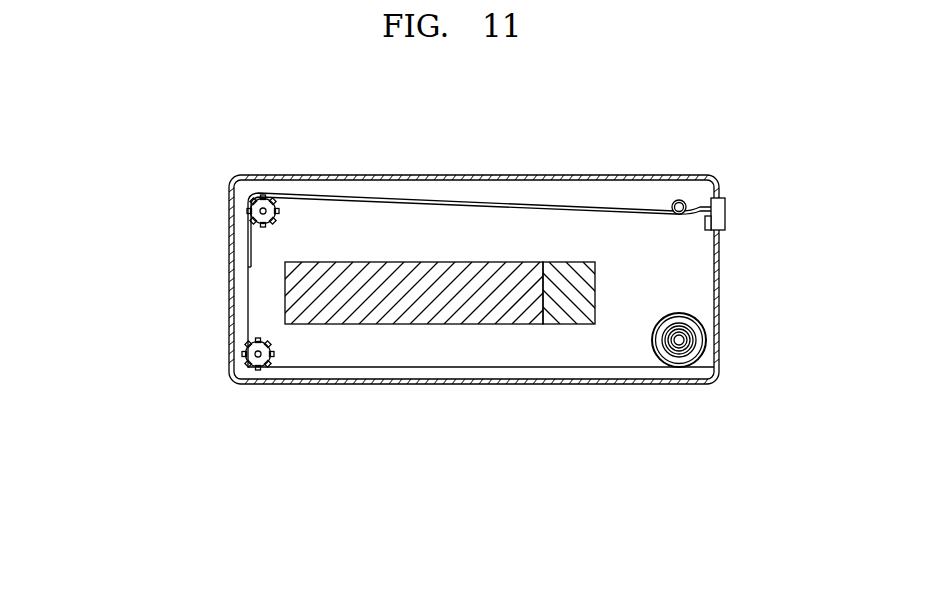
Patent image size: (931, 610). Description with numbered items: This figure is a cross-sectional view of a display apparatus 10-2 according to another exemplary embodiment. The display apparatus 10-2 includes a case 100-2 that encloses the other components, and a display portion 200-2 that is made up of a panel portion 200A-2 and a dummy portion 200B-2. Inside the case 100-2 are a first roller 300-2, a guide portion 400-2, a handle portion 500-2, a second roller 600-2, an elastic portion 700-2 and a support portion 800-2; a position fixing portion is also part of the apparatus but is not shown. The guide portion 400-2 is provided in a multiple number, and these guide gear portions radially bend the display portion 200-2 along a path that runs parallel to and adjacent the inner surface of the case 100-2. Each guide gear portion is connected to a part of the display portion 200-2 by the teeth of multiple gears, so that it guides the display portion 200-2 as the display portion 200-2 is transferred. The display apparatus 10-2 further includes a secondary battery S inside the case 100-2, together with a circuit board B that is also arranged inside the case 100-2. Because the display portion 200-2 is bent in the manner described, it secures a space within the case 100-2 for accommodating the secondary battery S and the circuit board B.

The display apparatus 10-2 is at (499, 116).
The case 100-2 is at (601, 176).
The display portion 200-2 is at (387, 280).
The panel portion 200A-2 is at (248, 244).
The dummy portion 200B-2 is at (248, 303).
The first roller 300-2 is at (706, 340).
The guide portion 400-2 is at (257, 358).
The handle portion 500-2 is at (722, 213).
The second roller 600-2 is at (684, 199).
The elastic portion 700-2 is at (680, 346).
The support portion 800-2 is at (710, 232).
The secondary battery S is at (413, 318).
The circuit board B is at (568, 318).